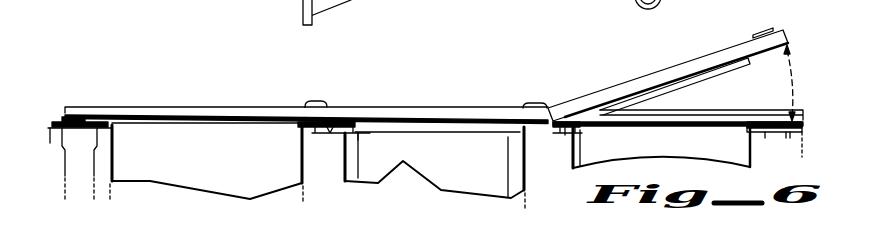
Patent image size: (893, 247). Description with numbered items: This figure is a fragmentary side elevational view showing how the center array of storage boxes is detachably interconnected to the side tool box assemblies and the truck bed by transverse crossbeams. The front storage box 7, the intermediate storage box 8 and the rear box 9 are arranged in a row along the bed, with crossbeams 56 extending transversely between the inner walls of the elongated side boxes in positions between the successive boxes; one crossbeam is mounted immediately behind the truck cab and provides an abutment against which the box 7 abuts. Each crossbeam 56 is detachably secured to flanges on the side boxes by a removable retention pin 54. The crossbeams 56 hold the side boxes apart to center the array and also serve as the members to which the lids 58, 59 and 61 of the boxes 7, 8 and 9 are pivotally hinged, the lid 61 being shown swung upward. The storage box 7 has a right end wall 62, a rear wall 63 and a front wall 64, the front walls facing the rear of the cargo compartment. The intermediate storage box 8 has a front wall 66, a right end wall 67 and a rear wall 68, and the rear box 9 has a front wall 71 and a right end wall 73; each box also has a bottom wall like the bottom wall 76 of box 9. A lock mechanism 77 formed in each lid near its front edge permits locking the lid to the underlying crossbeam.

The storage box 7 is at (190, 178).
The intermediate storage box 8 is at (464, 178).
The rear box 9 is at (687, 137).
The removable retention pin 54 is at (112, 139).
The crossbeam 56 is at (52, 133).
The lid 58 is at (202, 113).
The lid 59 is at (401, 113).
The lid 61 is at (658, 78).
The right end wall 62 is at (207, 162).
The rear wall 63 is at (115, 163).
The front wall 64 is at (302, 166).
The front wall 66 is at (518, 175).
The right end wall 67 is at (434, 175).
The rear wall 68 is at (347, 167).
The front wall 71 is at (748, 147).
The right end wall 73 is at (661, 148).
The bottom wall 76 is at (312, 133).
The lock mechanism 77 is at (312, 100).